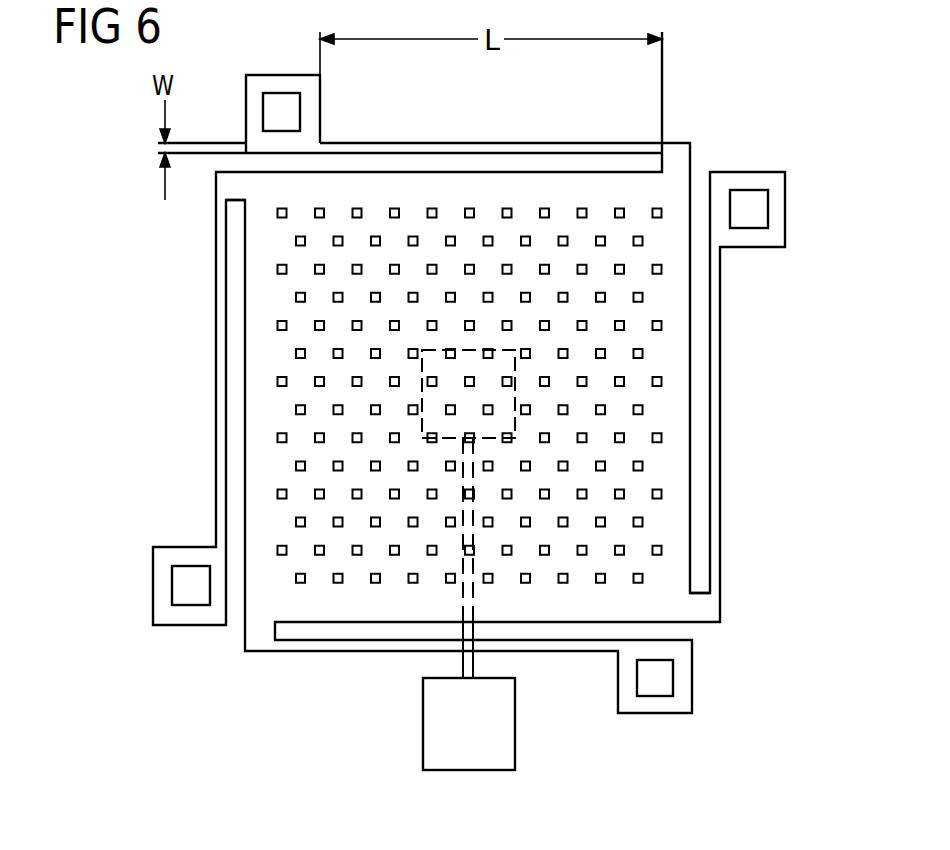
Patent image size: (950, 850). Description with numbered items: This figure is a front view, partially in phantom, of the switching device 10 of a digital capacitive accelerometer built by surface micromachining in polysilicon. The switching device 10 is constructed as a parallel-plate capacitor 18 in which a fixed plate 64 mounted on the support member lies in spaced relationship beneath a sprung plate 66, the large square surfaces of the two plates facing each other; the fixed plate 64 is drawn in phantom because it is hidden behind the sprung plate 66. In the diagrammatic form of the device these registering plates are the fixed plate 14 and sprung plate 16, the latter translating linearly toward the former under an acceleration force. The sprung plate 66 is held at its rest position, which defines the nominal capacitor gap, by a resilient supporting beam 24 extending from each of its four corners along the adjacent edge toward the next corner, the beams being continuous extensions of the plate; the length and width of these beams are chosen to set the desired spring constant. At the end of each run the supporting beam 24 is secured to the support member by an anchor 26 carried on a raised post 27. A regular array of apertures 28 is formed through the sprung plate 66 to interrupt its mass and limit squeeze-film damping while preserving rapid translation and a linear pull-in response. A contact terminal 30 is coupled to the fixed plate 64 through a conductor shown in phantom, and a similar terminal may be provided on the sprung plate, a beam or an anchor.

The switching device 10 is at (738, 57).
The fixed plate 14 is at (517, 378).
The sprung plate 16 is at (721, 592).
The capacitor 18 is at (750, 422).
The supporting beam 24 is at (450, 143).
The anchor 26 is at (280, 103).
The raised post 27 is at (140, 594).
The aperture 28 is at (283, 555).
The contact terminal 30 is at (515, 720).
The fixed plate 64 is at (446, 437).
The sprung plate 66 is at (242, 362).